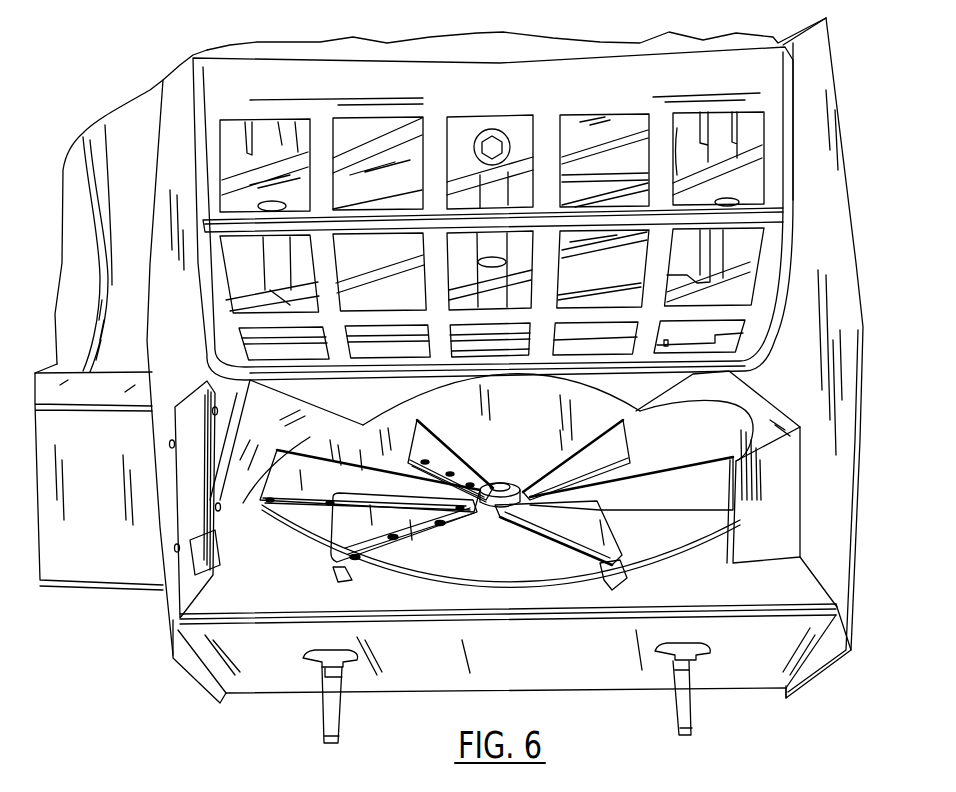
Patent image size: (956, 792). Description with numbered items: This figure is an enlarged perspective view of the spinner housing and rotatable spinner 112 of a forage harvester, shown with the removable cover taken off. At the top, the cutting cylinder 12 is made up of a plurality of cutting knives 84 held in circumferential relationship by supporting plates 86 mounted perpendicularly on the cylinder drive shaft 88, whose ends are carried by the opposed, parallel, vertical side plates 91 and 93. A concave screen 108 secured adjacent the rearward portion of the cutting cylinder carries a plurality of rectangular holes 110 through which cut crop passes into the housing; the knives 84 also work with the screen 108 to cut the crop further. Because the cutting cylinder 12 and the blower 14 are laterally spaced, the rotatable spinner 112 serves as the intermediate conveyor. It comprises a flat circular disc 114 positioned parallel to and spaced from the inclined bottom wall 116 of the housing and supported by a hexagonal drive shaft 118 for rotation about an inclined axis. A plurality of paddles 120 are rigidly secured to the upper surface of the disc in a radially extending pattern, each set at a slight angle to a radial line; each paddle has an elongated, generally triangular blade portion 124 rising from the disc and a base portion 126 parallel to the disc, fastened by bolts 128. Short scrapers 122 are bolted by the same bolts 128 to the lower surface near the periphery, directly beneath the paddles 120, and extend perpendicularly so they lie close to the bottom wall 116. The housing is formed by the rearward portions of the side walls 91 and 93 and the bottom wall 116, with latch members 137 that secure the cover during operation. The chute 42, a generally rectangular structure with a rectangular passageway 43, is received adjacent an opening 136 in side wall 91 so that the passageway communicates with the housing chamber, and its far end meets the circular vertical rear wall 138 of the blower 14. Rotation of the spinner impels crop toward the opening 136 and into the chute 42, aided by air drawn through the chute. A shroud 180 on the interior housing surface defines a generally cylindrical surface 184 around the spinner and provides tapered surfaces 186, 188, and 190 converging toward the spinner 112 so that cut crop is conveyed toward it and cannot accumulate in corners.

The cutting cylinder 12 is at (738, 181).
The blower 14 is at (94, 145).
The chute 42 is at (115, 575).
The rectangular passageway 43 is at (196, 552).
The cutting knives 84 is at (370, 140).
The supporting plates 86 is at (260, 135).
The cylinder drive shaft 88 is at (608, 150).
The side plate 91 is at (190, 300).
The side plate 93 is at (820, 262).
The concave screen 108 is at (520, 95).
The rectangular holes 110 is at (456, 119).
The rotatable spinner 112 is at (522, 583).
The flat circular disc 114 is at (428, 575).
The inclined bottom wall 116 is at (687, 592).
The hexagonal drive shaft 118 is at (500, 485).
The paddles 120 is at (330, 555).
The scrapers 122 is at (337, 573).
The blade portion 124 is at (325, 521).
The base portion 126 is at (444, 526).
The bolts 128 is at (390, 542).
The opening 136 is at (185, 405).
The latch members 137 is at (322, 709).
The circular vertical rear wall 138 is at (95, 262).
The shroud 180 is at (352, 415).
The generally cylindrical surface 184 is at (487, 397).
The tapered surface 186 is at (245, 460).
The tapered surface 188 is at (585, 383).
The tapered surface 190 is at (753, 397).